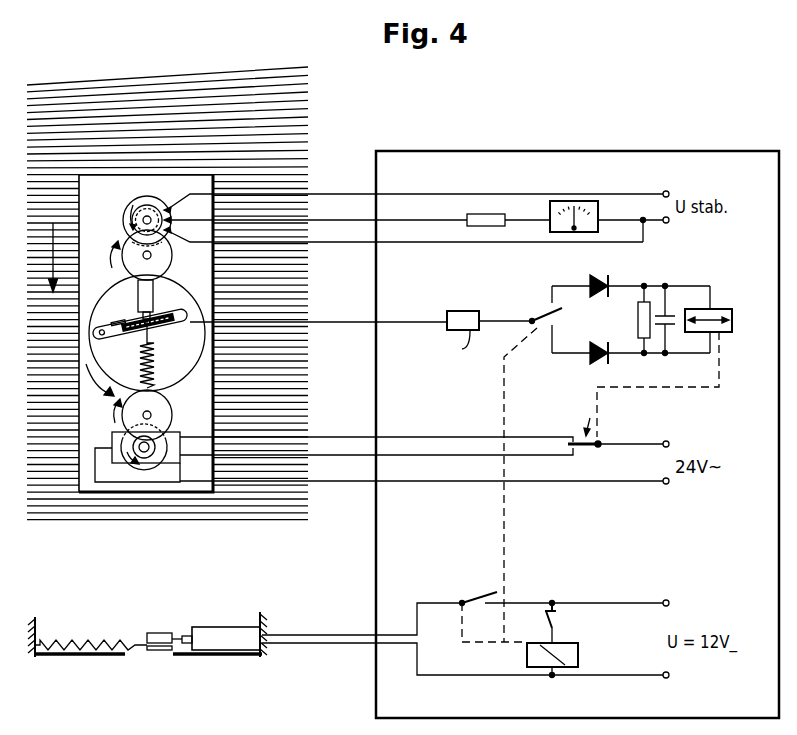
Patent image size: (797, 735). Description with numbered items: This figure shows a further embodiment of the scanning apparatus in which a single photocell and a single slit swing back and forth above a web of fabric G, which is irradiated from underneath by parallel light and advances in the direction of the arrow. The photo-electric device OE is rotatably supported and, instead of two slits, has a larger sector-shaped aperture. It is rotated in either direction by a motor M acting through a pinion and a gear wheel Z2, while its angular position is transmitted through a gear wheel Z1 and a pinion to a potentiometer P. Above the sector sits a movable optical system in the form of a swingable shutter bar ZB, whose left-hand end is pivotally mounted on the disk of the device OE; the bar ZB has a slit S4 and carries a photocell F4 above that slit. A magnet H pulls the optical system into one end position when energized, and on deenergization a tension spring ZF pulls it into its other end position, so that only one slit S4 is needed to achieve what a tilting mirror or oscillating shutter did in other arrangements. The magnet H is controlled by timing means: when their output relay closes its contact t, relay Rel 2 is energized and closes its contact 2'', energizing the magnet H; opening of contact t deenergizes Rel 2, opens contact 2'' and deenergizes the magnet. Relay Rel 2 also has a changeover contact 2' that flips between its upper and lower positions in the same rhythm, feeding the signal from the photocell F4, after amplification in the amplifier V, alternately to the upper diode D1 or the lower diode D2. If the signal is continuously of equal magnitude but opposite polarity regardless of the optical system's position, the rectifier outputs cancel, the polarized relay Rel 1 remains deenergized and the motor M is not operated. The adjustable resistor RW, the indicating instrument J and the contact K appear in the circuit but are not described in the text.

The web of fabric G is at (51, 238).
The potentiometer P is at (124, 210).
The gear wheel Z1 is at (169, 250).
The magnet H is at (154, 284).
The slit S4 is at (120, 326).
The photocell F4 is at (152, 320).
The swingable shutter bar ZB is at (186, 326).
The tension spring ZF is at (139, 354).
The photo-electric device OE is at (173, 370).
The gear wheel Z2 is at (172, 412).
The motor M is at (163, 460).
The variable resistor RW is at (493, 213).
The measuring instrument J is at (593, 201).
The amplifier V is at (465, 311).
The upper diode D1 is at (594, 275).
The lower diode D2 is at (595, 342).
The polarized relay Rel 1 is at (682, 361).
The contact 2' is at (533, 475).
The contact K is at (580, 449).
The contact 2'' is at (494, 606).
The contact t is at (545, 618).
The relay Rel 2 is at (527, 658).